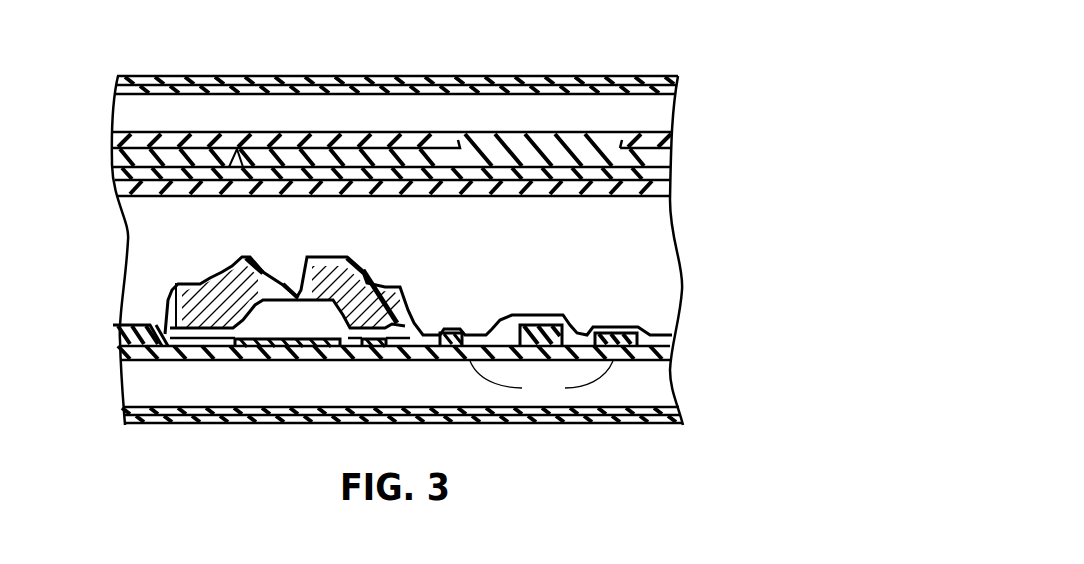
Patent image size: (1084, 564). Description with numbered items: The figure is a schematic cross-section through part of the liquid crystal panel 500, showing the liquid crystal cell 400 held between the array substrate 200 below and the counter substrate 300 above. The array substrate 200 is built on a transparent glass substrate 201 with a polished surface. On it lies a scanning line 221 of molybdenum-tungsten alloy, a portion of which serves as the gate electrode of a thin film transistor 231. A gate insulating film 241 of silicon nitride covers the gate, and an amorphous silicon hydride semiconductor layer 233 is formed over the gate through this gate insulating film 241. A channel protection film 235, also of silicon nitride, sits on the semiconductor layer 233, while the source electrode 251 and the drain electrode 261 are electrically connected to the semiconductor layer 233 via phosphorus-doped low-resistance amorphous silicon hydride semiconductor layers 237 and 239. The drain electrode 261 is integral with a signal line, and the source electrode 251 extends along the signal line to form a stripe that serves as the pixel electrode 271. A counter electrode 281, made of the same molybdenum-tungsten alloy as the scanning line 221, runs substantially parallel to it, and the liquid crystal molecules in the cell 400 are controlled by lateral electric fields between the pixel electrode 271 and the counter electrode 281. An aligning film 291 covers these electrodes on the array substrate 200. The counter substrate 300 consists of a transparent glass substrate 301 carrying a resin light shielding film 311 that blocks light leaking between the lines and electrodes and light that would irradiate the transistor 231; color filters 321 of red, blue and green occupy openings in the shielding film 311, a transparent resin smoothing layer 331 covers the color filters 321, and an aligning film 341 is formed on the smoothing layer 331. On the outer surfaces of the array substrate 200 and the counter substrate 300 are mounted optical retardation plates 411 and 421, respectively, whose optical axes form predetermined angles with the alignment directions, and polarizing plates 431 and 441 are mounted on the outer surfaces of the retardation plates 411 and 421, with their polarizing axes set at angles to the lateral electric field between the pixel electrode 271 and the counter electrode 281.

The liquid crystal panel 500 is at (642, 23).
The counter substrate 300 is at (706, 119).
The array substrate 200 is at (700, 347).
The liquid crystal cell 400 is at (674, 238).
The polarizing plate 441 is at (510, 83).
The optical retardation plate 421 is at (620, 88).
The glass substrate 301 is at (470, 104).
The light shielding film 311 is at (317, 137).
The color filters 321 is at (373, 158).
The smoothing layer 331 is at (112, 172).
The aligning film 341 is at (118, 190).
The low-resistance amorphous silicon hydride semiconductor layer 237 is at (403, 332).
The drain electrode 261 is at (260, 272).
The thin film transistor 231 is at (313, 268).
The low-resistance amorphous silicon hydride semiconductor layer 239 is at (185, 323).
The source electrode 251 is at (372, 297).
The channel protection film 235 is at (317, 318).
The scanning line 221 is at (268, 355).
The amorphous silicon hydride semiconductor layer 233 is at (373, 352).
The gate insulating film 241 is at (148, 356).
The pixel electrode 271 is at (538, 327).
The aligning film 291 is at (628, 329).
The counter electrode 281 is at (562, 400).
The glass substrate 201 is at (664, 380).
The optical retardation plate 411 is at (678, 411).
The polarizing plate 431 is at (606, 424).